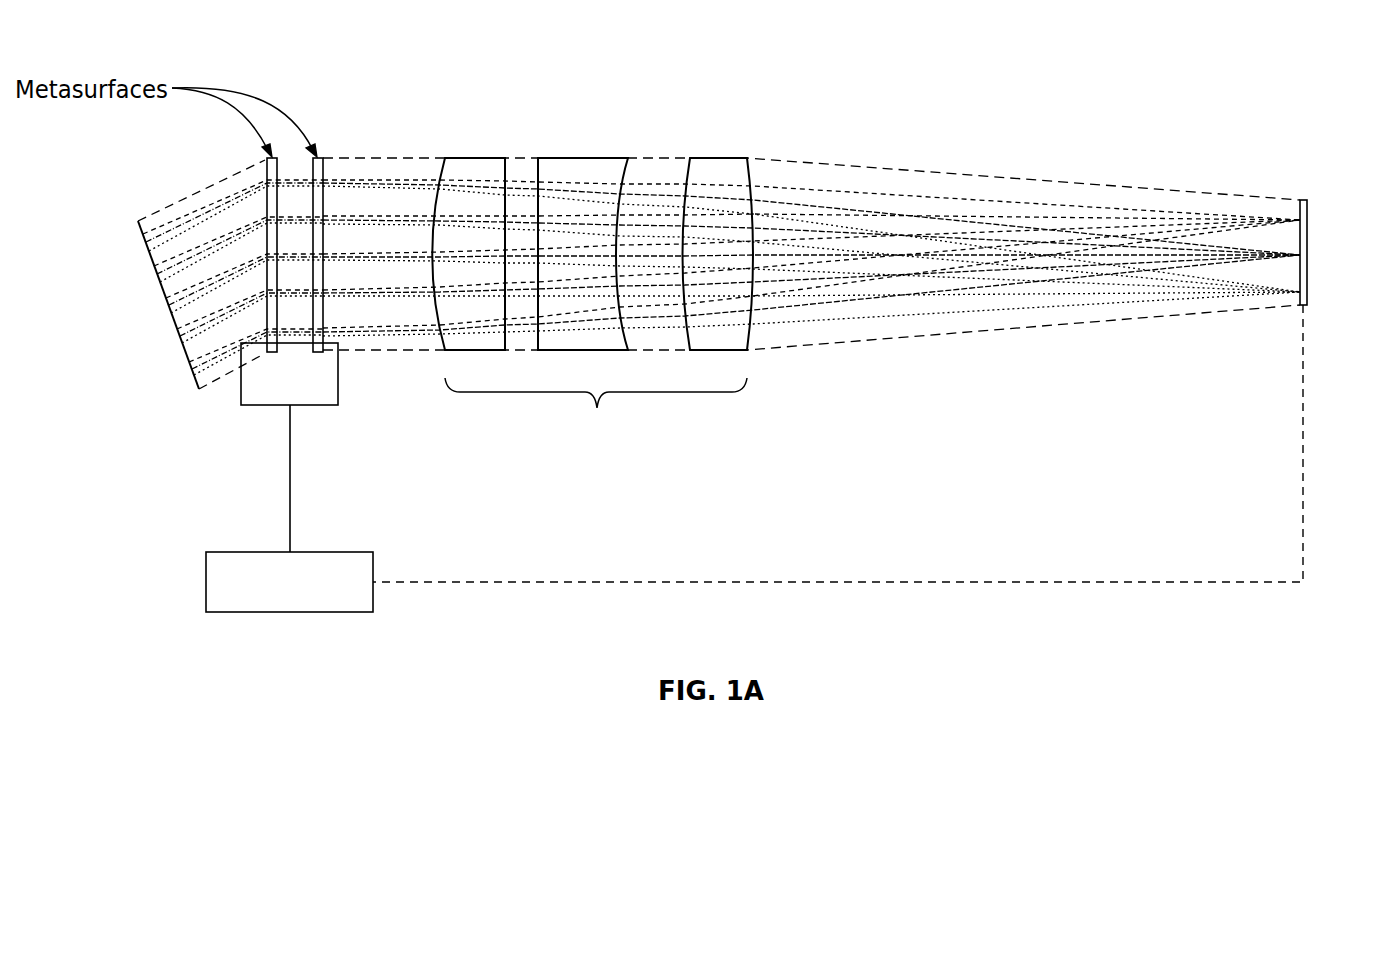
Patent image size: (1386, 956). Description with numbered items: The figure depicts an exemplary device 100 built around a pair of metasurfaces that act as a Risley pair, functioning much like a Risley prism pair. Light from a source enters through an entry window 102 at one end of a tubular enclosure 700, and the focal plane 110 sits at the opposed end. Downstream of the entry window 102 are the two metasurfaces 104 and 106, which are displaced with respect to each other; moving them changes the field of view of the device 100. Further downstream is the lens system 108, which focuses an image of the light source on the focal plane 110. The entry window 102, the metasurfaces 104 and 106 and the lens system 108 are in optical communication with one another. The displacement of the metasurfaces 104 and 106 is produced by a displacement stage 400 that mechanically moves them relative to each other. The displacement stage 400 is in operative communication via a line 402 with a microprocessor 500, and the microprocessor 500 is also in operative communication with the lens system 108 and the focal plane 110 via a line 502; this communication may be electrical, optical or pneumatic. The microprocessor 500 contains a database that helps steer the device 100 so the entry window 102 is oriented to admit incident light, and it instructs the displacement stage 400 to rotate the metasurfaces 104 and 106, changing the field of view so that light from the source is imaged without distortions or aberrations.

The device 100 is at (1097, 31).
The entry window 102 is at (172, 321).
The metasurface 104 is at (266, 172).
The metasurface 106 is at (324, 176).
The lens system 108 is at (592, 281).
The focal plane 110 is at (1309, 262).
The displacement stage 400 is at (289, 374).
The line 402 is at (290, 478).
The microprocessor 500 is at (289, 582).
The line 502 is at (1303, 452).
The tubular enclosure 700 is at (880, 168).